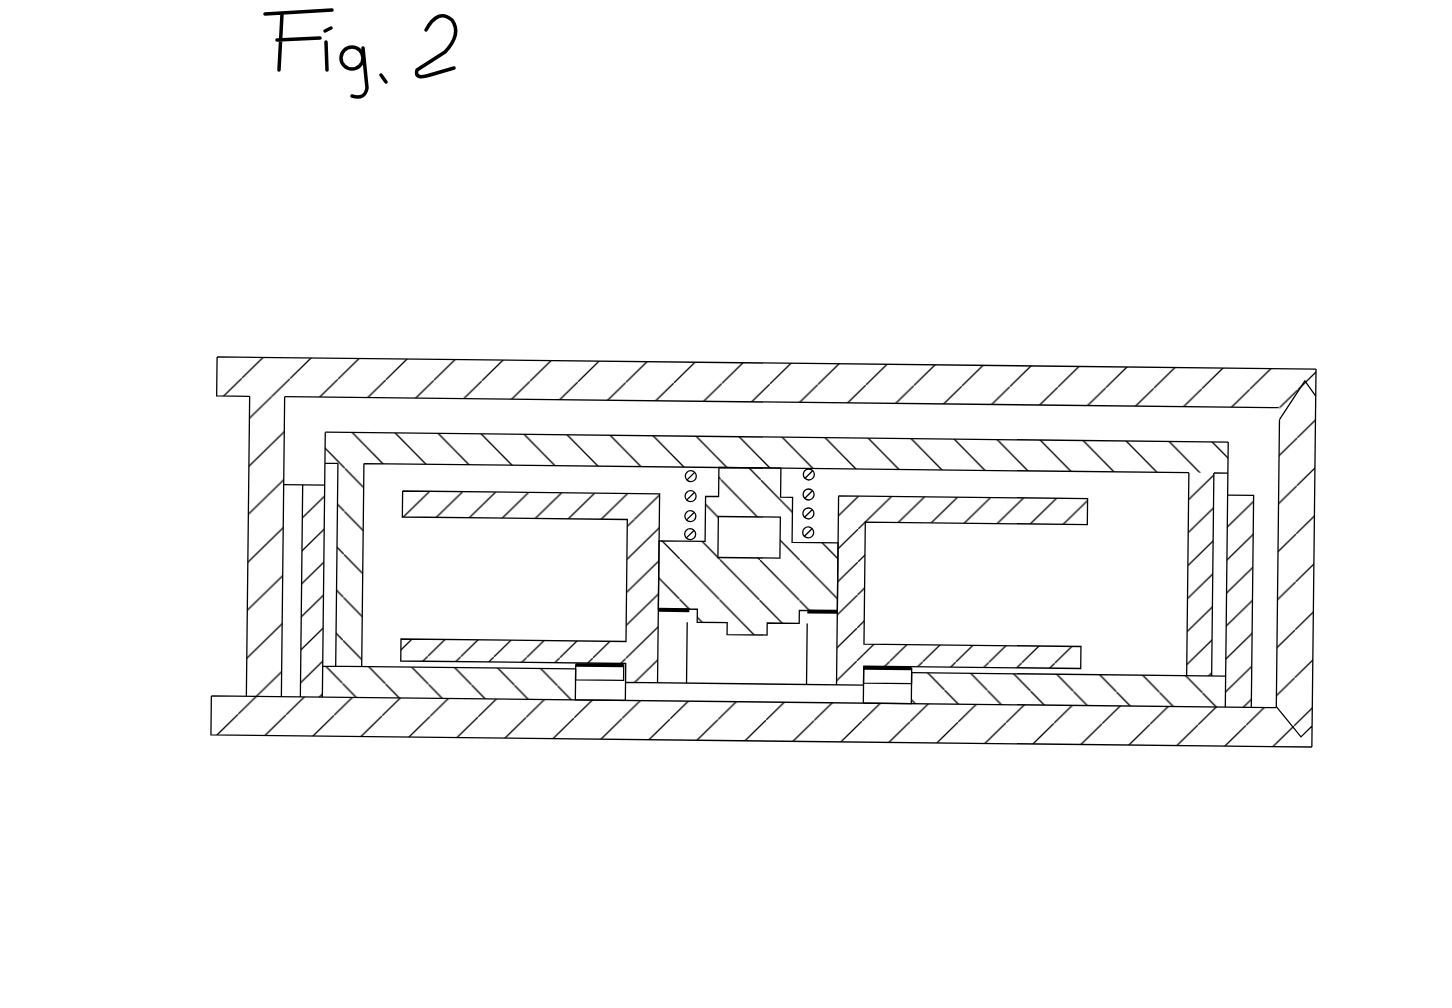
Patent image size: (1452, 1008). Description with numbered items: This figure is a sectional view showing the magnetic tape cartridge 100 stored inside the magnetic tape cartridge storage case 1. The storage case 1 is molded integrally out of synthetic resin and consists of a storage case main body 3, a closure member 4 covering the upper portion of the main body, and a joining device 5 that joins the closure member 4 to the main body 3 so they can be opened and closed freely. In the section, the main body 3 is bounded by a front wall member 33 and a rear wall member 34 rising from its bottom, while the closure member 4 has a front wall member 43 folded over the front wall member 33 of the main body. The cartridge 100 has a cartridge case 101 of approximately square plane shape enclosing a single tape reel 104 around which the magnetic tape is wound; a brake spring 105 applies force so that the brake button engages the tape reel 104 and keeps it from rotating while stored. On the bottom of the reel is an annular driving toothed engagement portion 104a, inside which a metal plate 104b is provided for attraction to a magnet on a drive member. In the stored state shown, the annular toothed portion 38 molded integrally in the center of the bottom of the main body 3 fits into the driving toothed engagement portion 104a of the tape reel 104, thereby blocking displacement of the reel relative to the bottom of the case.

The magnetic tape cartridge storage case 1 is at (800, 363).
The storage case main body 3 is at (1132, 750).
The closure member 4 is at (628, 364).
The joining device 5 is at (1314, 543).
The front wall member 33 is at (307, 600).
The rear wall member 34 is at (1247, 628).
The annular toothed portion 38 is at (588, 696).
The front wall member 43 is at (255, 462).
The magnetic tape cartridge 100 is at (1023, 436).
The cartridge case 101 is at (1128, 455).
The tape reel 104 is at (948, 495).
The driving toothed engagement portion 104a is at (610, 685).
The metal plate 104b is at (830, 686).
The brake spring 105 is at (689, 471).